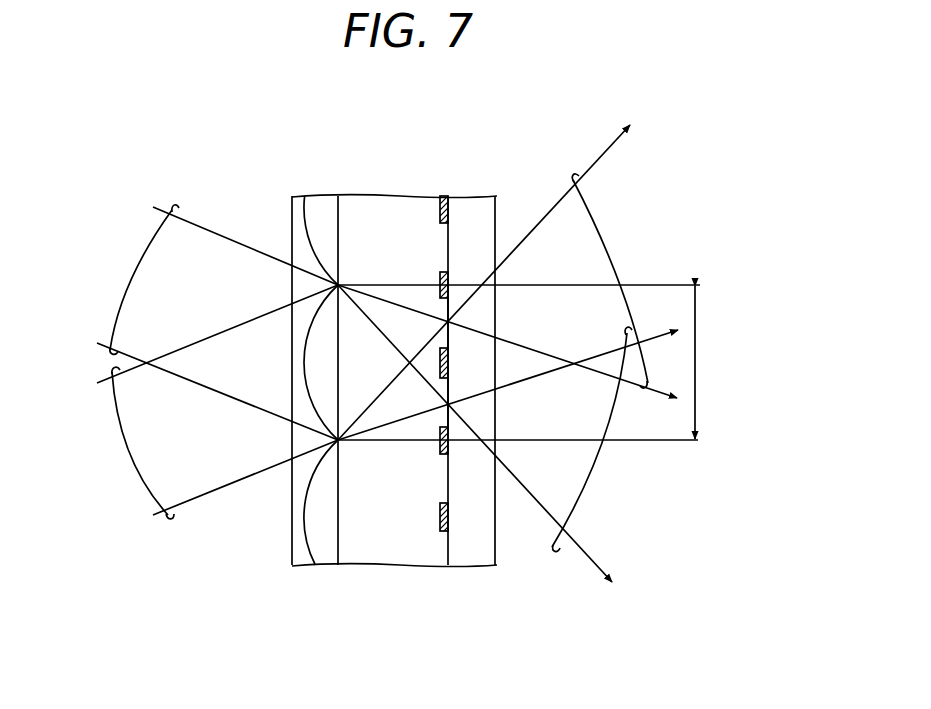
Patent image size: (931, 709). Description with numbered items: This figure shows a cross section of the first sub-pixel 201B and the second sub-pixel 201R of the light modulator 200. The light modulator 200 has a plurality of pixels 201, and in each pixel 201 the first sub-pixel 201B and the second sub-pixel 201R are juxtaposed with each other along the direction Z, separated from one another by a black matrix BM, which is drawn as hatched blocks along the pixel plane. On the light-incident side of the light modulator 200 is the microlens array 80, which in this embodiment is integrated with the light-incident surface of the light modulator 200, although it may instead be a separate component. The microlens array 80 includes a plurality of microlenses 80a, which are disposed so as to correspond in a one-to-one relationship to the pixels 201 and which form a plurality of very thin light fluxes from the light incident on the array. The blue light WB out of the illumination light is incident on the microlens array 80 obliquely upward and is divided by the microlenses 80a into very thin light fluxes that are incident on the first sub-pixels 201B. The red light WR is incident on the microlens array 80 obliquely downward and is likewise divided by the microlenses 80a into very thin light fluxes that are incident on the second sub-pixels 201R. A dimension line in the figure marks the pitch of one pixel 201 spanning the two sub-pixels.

The microlens array 80 is at (305, 552).
The microlens 80a is at (310, 375).
The light modulator 200 is at (497, 571).
The pixel 201 is at (541, 362).
The first sub-pixel 201B is at (437, 312).
The second sub-pixel 201R is at (444, 409).
The black matrix BM is at (440, 280).
The blue light WB is at (612, 250).
The red light WR is at (588, 480).